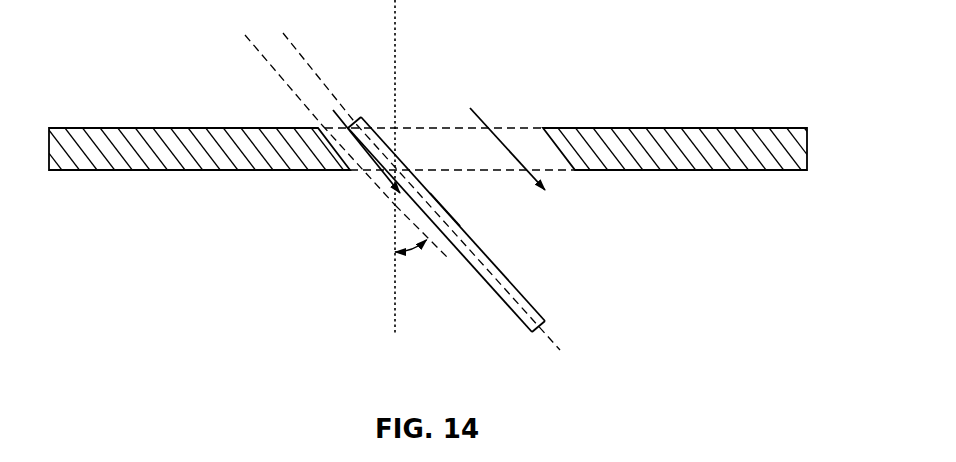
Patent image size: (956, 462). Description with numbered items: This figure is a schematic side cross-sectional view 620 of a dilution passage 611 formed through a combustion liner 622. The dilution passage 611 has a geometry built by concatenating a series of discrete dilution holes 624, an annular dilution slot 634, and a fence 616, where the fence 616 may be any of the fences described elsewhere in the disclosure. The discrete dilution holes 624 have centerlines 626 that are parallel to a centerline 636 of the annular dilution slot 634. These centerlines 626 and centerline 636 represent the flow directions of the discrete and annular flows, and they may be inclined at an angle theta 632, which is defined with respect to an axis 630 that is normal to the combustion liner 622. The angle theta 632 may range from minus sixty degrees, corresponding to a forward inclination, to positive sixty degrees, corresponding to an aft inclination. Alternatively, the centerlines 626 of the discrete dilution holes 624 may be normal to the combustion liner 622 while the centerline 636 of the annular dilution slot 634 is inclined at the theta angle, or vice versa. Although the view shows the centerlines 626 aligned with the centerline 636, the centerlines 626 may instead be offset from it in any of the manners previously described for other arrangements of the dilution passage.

The dilution passage 611 is at (340, 122).
The fence 616 is at (528, 294).
The schematic side cross-sectional view 620 is at (689, 42).
The combustion liner 622 is at (142, 127).
The discrete dilution holes 624 is at (521, 117).
The centerlines of the discrete dilution holes 626 is at (447, 217).
The axis normal to the combustion liner 630 is at (393, 270).
The angle theta 632 is at (428, 280).
The annular dilution slot 634 is at (317, 123).
The centerline of the annular dilution slot 636 is at (378, 180).